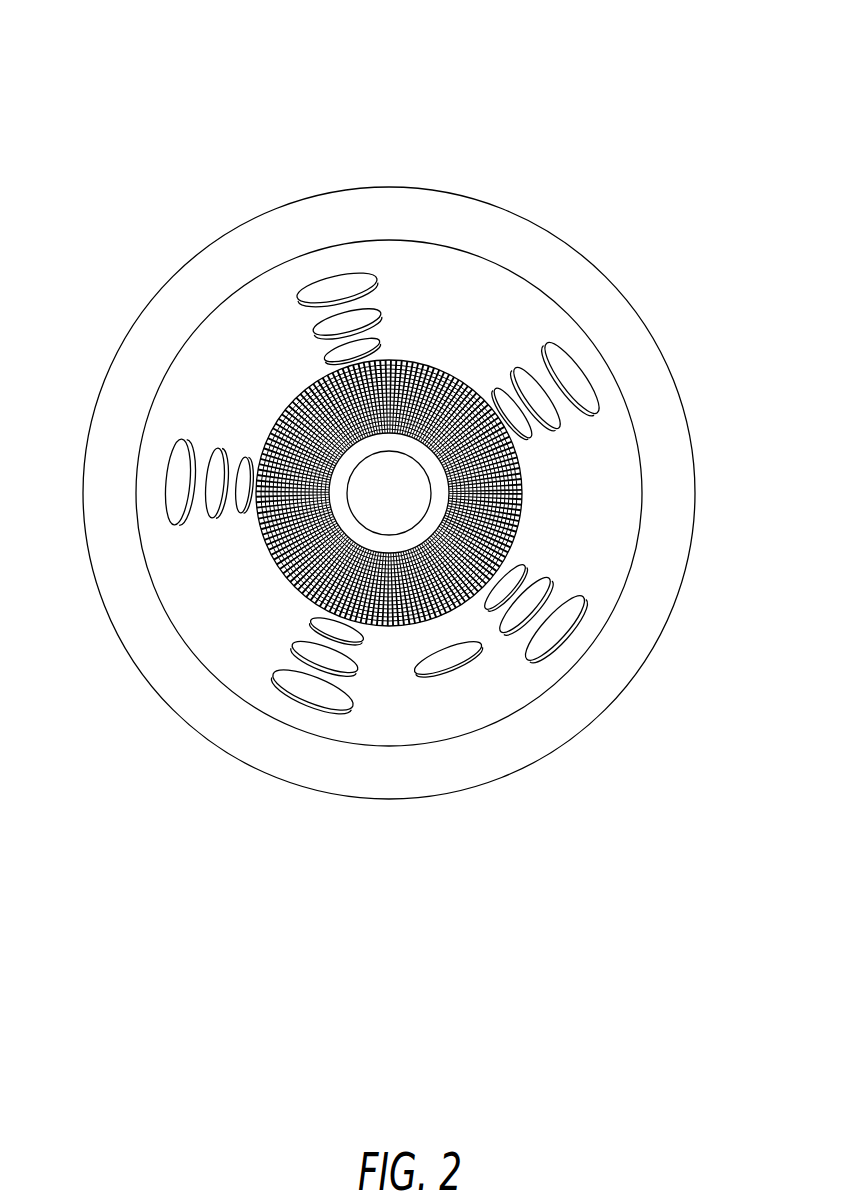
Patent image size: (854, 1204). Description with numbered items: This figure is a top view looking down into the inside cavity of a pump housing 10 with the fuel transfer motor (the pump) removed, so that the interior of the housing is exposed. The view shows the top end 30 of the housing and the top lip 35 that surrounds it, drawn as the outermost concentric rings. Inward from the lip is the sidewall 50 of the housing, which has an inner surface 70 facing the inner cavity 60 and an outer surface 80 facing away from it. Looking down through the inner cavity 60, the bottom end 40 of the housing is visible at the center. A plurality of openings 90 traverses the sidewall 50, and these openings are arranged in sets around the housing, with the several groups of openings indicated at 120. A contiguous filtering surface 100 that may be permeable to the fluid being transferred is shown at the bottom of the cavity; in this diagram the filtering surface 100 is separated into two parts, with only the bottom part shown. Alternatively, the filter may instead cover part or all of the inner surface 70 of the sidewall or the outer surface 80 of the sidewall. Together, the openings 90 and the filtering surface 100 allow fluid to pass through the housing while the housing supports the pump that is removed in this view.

The light fixture assembly 10 is at (278, 43).
The top end of the housing 30 is at (637, 347).
The top lip 35 is at (608, 310).
The bottom end of the housing 40 is at (389, 493).
The sidewall of the housing 50 is at (400, 165).
The inner cavity of the housing 60 is at (432, 273).
The inner surface of the sidewall 70 is at (257, 322).
The outer surface of the sidewall 80 is at (137, 318).
The plurality of openings 90 is at (185, 535).
The filtering surface 100 is at (440, 383).
The lens sets 120 is at (596, 248).